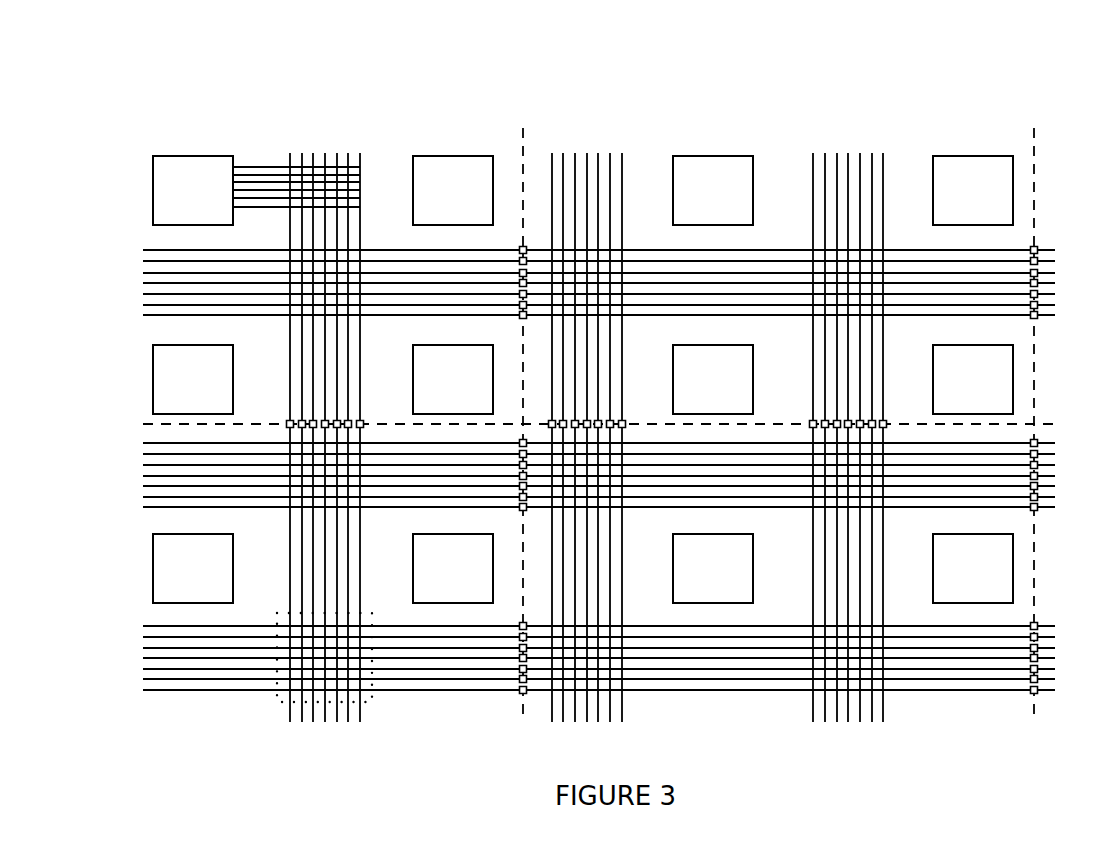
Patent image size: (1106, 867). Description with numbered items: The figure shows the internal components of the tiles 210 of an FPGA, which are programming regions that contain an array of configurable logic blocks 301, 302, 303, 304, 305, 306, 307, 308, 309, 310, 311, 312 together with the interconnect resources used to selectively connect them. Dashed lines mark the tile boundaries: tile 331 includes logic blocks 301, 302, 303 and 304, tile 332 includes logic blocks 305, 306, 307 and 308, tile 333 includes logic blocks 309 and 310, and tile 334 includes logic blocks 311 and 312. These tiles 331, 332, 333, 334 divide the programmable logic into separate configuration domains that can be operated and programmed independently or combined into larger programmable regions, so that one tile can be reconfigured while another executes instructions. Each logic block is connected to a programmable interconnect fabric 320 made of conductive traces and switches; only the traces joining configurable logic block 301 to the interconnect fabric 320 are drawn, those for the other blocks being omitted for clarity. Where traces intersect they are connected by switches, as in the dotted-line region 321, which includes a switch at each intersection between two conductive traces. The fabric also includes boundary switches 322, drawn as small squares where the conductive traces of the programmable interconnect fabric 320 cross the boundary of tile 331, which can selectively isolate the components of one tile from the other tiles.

The tiles 210 is at (986, 69).
The configurable logic block 301 is at (180, 199).
The configurable logic block 302 is at (440, 199).
The configurable logic block 303 is at (180, 388).
The configurable logic block 304 is at (440, 388).
The configurable logic block 305 is at (700, 199).
The configurable logic block 306 is at (960, 199).
The configurable logic block 307 is at (700, 388).
The configurable logic block 308 is at (960, 388).
The configurable logic block 309 is at (180, 577).
The configurable logic block 310 is at (440, 577).
The configurable logic block 311 is at (700, 577).
The configurable logic block 312 is at (960, 577).
The programmable interconnect fabric 320 is at (586, 142).
The region 321 is at (269, 706).
The boundary switches 322 is at (485, 283).
The tile 331 is at (326, 96).
The tile 332 is at (805, 96).
The tile 333 is at (326, 756).
The tile 334 is at (805, 756).